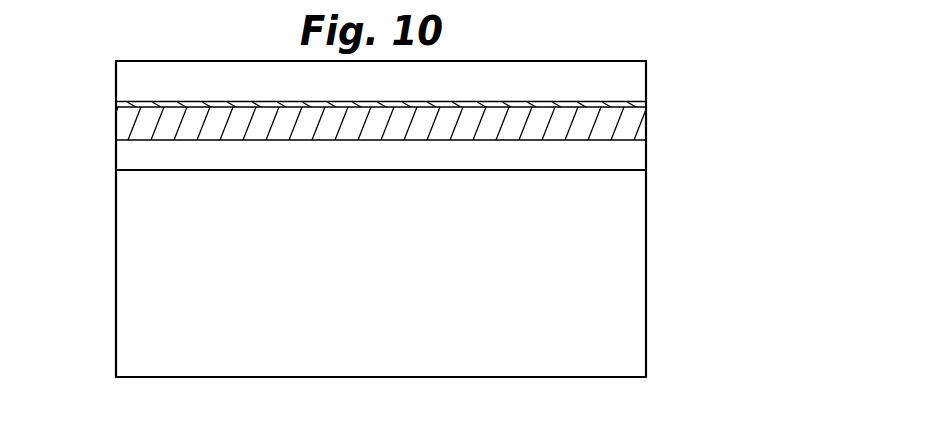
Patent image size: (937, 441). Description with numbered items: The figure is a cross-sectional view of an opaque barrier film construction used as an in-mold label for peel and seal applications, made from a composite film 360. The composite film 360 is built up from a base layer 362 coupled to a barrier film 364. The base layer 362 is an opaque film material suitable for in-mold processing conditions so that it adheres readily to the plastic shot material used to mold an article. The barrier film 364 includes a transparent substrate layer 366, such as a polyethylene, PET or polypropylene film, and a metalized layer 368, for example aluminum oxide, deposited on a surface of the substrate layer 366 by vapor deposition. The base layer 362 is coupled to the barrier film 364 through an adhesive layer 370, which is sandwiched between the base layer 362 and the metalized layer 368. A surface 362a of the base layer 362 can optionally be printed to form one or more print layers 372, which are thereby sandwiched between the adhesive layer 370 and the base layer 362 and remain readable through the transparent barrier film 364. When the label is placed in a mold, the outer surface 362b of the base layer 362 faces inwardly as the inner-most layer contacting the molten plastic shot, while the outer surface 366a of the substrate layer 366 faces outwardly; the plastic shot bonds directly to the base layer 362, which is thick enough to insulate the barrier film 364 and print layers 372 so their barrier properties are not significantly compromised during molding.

The composite film 360 is at (722, 28).
The base layer 362 is at (623, 292).
The surface of base layer 362a is at (135, 170).
The outer surface of base layer 362b is at (146, 378).
The barrier film 364 is at (104, 60).
The transparent substrate layer 366 is at (628, 80).
The outer surface of substrate layer 366a is at (609, 61).
The metalized layer 368 is at (646, 105).
The adhesive layer 370 is at (135, 126).
The print layer 372 is at (633, 153).